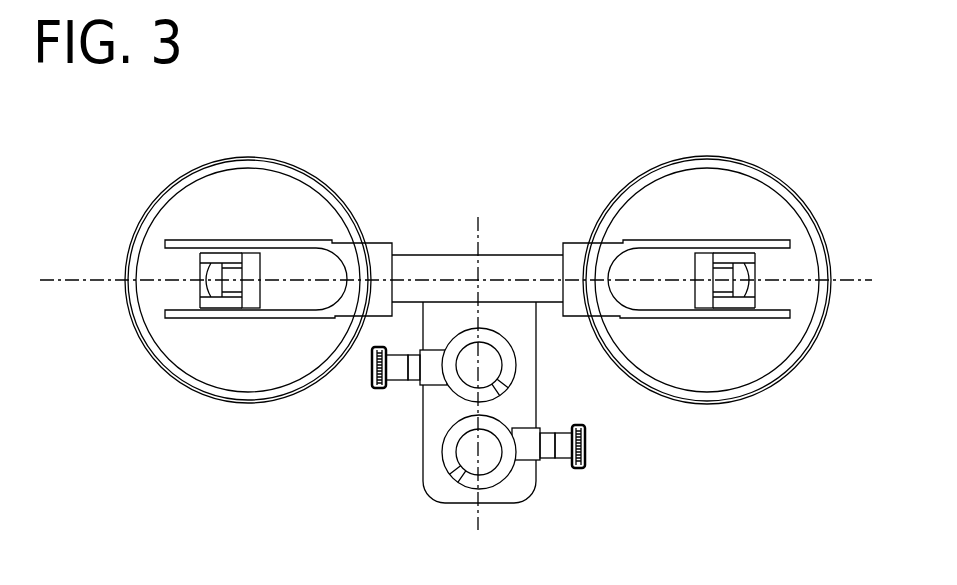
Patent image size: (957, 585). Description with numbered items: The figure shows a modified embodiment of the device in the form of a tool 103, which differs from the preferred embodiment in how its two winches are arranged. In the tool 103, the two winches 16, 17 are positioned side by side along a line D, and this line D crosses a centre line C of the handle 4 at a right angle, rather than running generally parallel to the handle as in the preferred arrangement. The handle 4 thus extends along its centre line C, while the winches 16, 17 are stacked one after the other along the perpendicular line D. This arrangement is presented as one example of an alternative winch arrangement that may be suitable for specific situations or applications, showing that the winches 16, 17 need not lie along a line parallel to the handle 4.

The tool 103 is at (155, 383).
The handle 4 is at (502, 269).
The winch 16 is at (516, 473).
The winch 17 is at (448, 390).
The centre line C is at (861, 280).
The line D is at (477, 236).